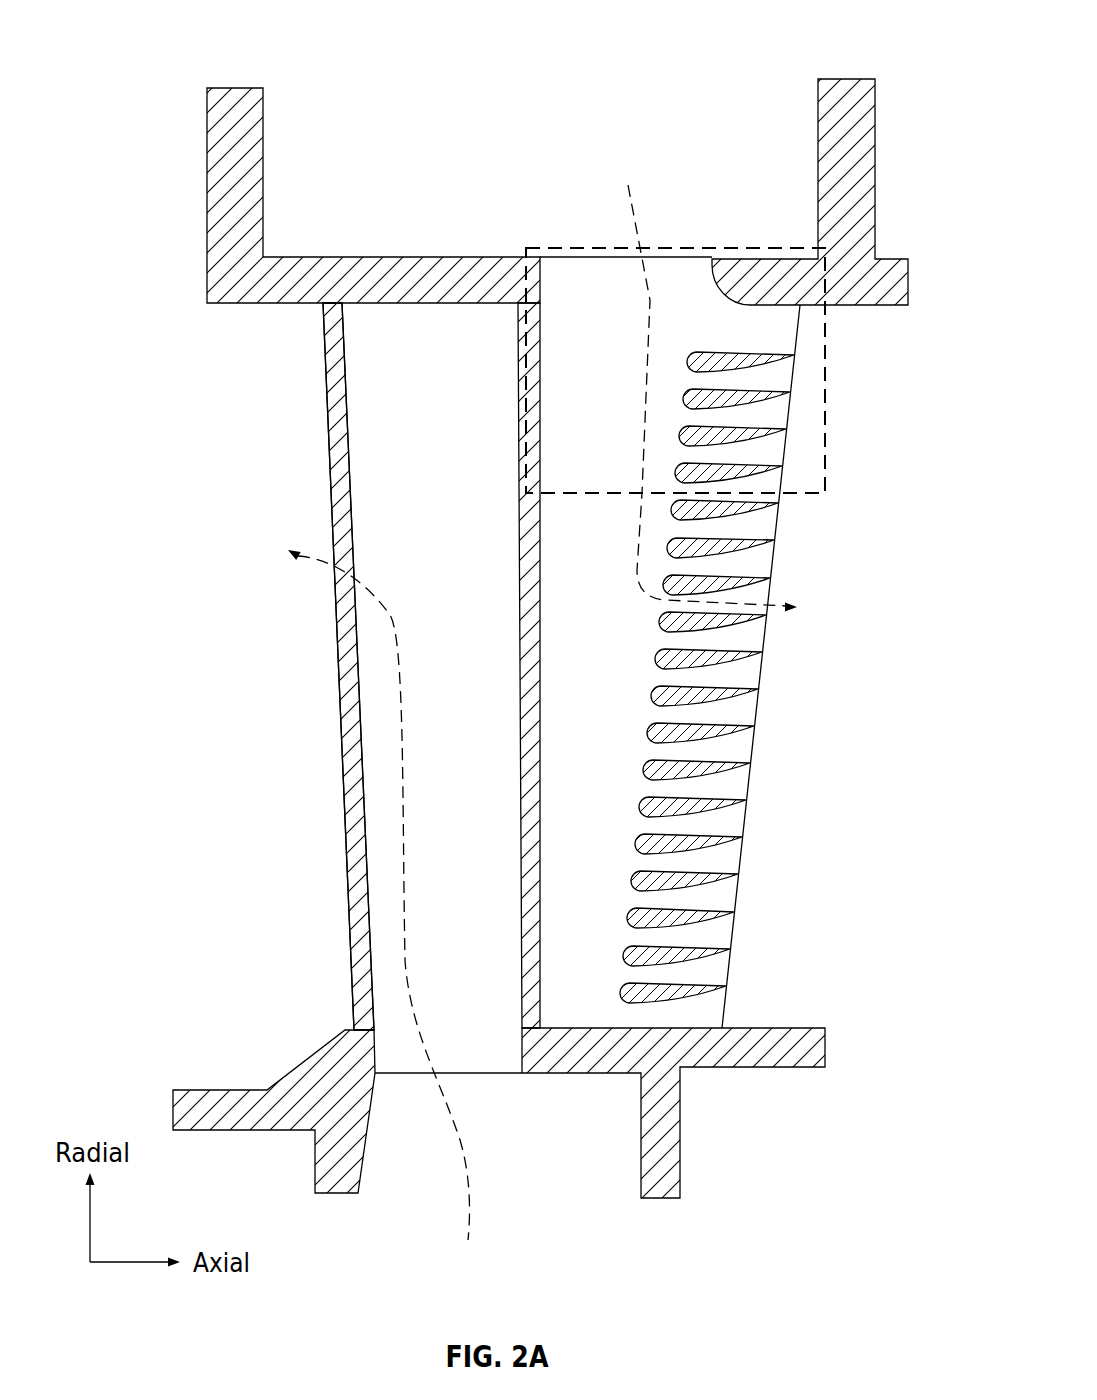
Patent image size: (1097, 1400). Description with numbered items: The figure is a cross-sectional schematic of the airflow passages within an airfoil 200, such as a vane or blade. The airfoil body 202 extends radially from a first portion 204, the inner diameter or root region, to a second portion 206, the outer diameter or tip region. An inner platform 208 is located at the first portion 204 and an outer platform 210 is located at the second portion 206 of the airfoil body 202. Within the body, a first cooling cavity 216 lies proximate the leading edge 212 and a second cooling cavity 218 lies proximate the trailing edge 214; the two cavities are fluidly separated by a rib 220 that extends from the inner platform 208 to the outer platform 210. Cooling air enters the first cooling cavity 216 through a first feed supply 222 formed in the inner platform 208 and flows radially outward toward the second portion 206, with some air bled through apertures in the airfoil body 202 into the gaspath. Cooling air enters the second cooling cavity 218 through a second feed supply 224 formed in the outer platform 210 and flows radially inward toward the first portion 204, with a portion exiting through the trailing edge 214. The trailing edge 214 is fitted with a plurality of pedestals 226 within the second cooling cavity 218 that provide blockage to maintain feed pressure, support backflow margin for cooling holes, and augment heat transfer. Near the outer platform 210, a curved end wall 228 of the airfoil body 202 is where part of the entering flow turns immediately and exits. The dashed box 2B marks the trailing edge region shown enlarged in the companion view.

The airfoil 200 is at (843, 25).
The airfoil body 202 is at (333, 437).
The first portion 204 is at (200, 1057).
The second portion 206 is at (296, 346).
The inner platform 208 is at (311, 1092).
The outer platform 210 is at (221, 221).
The leading edge 212 is at (345, 752).
The trailing edge 214 is at (748, 745).
The first cooling cavity 216 is at (421, 581).
The second cooling cavity 218 is at (573, 696).
The rib 220 is at (527, 520).
The first feed supply 222 is at (501, 1088).
The second feed supply 224 is at (580, 233).
The pedestals 226 is at (777, 398).
The curved end wall 228 is at (720, 292).
The dashed box 2B is at (798, 497).